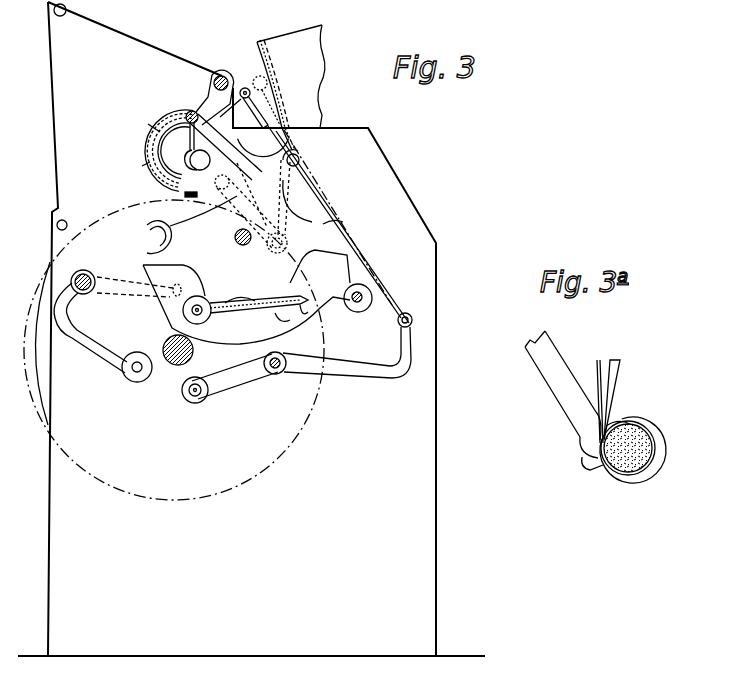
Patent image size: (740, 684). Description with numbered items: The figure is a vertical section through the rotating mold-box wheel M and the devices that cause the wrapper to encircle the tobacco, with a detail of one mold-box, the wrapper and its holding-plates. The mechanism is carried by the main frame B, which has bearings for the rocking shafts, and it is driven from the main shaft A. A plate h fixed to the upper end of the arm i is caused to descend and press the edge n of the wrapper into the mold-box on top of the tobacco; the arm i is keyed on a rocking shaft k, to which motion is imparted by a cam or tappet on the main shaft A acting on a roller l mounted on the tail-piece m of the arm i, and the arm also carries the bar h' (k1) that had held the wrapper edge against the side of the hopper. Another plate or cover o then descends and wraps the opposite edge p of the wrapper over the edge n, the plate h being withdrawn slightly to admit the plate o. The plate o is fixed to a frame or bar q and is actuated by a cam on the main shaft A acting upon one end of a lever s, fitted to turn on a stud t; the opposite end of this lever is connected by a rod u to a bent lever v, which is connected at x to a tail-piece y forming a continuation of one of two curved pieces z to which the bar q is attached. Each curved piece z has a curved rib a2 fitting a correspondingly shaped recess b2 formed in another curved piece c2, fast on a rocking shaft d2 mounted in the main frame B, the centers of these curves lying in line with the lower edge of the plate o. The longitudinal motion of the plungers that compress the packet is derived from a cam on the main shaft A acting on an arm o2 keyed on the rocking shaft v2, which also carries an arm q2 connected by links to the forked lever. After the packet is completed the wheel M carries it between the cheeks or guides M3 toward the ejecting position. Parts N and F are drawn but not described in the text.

In FIG. 3, the main frame B is at (251, 329).
In FIG. 3, the plate or cover o is at (190, 143).
In FIG. 3A, the plate or cover o is at (564, 400).
In FIG. 3, the rocking shaft d2 is at (228, 76).
In FIG. 3, the plate h is at (248, 90).
In FIG. 3A, the plate h is at (616, 400).
In FIG. 3, the frame or bar q is at (192, 111).
In FIG. 3, the curved piece c2 is at (169, 150).
In FIG. 3, the curved pieces z is at (150, 120).
In FIG. 3, the curved rib or projection a2 is at (138, 165).
In FIG. 3, the recess b2 is at (188, 186).
In FIG. 3, the tail-piece y is at (226, 147).
In FIG. 3, the bar k1 is at (263, 150).
In FIG. 3, the bent lever v is at (228, 205).
In FIG. 3, the rod u is at (360, 253).
In FIG. 3, the arm i is at (312, 203).
In FIG. 3, the drum N is at (159, 237).
In FIG. 3A, the drum N is at (640, 482).
In FIG. 3, the wheel M is at (203, 223).
In FIG. 3, the pin F is at (243, 251).
In FIG. 3, the connection point x is at (277, 254).
In FIG. 3, the rocking shaft v2 is at (85, 273).
In FIG. 3, the arm o2 is at (100, 348).
In FIG. 3, the arm q2 is at (125, 282).
In FIG. 3, the cheeks or guides M3 is at (246, 297).
In FIG. 3, the tail-piece m is at (253, 302).
In FIG. 3, the rocking shaft k is at (360, 312).
In FIG. 3, the roller l is at (205, 324).
In FIG. 3, the main shaft A is at (168, 342).
In FIG. 3, the lever s is at (234, 388).
In FIG. 3, the stud t is at (276, 378).
In FIG. 3A, the edge of the wrapper p is at (591, 401).
In FIG. 3A, the edge of the wrapper n is at (618, 422).